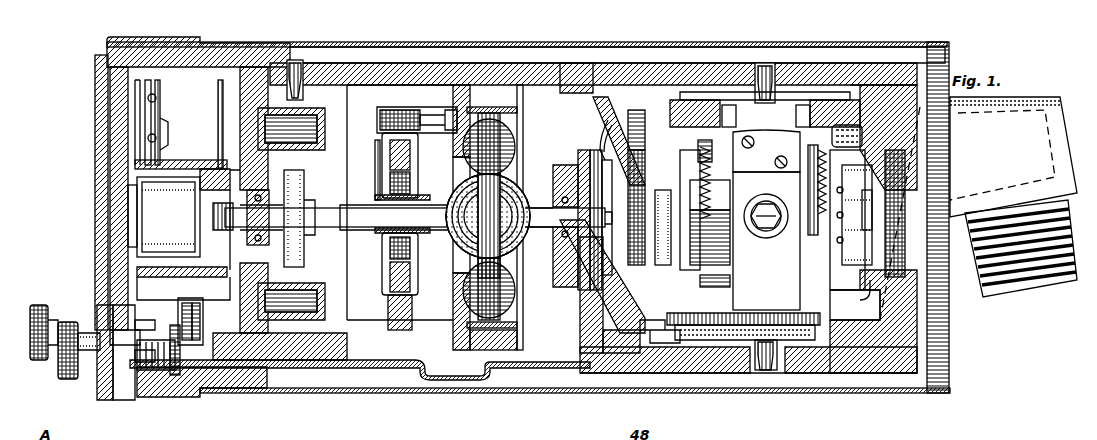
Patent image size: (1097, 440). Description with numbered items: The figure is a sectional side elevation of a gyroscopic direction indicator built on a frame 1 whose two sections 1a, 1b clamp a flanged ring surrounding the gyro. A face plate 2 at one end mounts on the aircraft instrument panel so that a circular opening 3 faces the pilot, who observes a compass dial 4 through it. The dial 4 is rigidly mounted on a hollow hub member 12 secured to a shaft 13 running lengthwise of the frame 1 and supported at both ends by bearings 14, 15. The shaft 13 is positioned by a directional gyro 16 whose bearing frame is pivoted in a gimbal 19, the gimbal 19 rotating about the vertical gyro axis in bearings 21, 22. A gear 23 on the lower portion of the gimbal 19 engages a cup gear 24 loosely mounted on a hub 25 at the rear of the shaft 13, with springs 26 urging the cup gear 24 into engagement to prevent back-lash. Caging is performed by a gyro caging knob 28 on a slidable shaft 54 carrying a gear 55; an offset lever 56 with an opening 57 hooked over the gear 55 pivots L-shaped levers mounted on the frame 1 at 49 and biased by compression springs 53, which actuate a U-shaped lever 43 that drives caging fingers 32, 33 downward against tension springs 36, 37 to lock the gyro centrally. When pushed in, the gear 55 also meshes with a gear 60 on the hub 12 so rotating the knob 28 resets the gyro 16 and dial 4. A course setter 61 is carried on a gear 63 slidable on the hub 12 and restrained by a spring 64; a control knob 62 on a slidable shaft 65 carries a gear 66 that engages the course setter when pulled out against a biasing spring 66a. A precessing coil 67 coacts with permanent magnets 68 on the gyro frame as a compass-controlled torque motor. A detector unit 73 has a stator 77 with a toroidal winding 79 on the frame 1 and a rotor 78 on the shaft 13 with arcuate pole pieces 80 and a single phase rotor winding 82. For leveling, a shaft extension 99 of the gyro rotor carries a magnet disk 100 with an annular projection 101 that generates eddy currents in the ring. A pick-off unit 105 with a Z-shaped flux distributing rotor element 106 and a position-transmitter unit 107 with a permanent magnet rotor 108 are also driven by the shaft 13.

The frame 1 is at (385, 74).
The frame section 1a is at (895, 140).
The frame section 1b is at (895, 318).
The face plate 2 is at (106, 44).
The circular opening 3 is at (100, 83).
The compass dial 4 is at (140, 161).
The hollow hub member 12 is at (205, 157).
The shaft 13 is at (352, 208).
The bearing 14 is at (265, 190).
The bearing 15 is at (553, 186).
The directional gyro 16 is at (730, 234).
The gimbal 19 is at (763, 180).
The bearing 21 is at (766, 66).
The bearing 22 is at (766, 372).
The gear 23 is at (680, 325).
The cup gear 24 is at (628, 300).
The hub 25 is at (555, 270).
The springs 26 is at (632, 128).
The gyro caging knob 28 is at (45, 305).
The caging finger 32 is at (736, 125).
The caging finger 33 is at (797, 125).
The tension spring 36 is at (702, 185).
The tension spring 37 is at (818, 156).
The U-shaped lever 43 is at (846, 143).
The pivot 49 is at (905, 99).
The compression springs 53 is at (855, 217).
The slidable shaft 54 is at (85, 330).
The gear 55 is at (186, 303).
The offset lever 56 is at (378, 360).
The opening 57 is at (200, 303).
The gear 60 is at (223, 130).
The course setter 61 is at (148, 76).
The control knob 62 is at (70, 374).
The gear 63 is at (156, 100).
The spring 64 is at (166, 128).
The slidable shaft 65 is at (155, 372).
The gear 66 is at (177, 377).
The biasing spring 66a is at (135, 348).
The precessing coil 67 is at (905, 236).
The permanent magnets 68 is at (712, 156).
The detector unit 73 is at (510, 306).
The stator 77 is at (500, 162).
The rotor 78 is at (500, 262).
The toroidal winding 79 is at (512, 122).
The arcuate pole pieces 80 is at (478, 183).
The single phase rotor winding 82 is at (515, 248).
The shaft extension 99 is at (695, 232).
The magnet disk 100 is at (678, 266).
The annular projection 101 is at (655, 190).
The pick-off unit 105 is at (410, 145).
The flux distributing rotor element 106 is at (378, 160).
The position-transmitter unit 107 is at (325, 130).
The permanent magnet rotor 108 is at (306, 200).